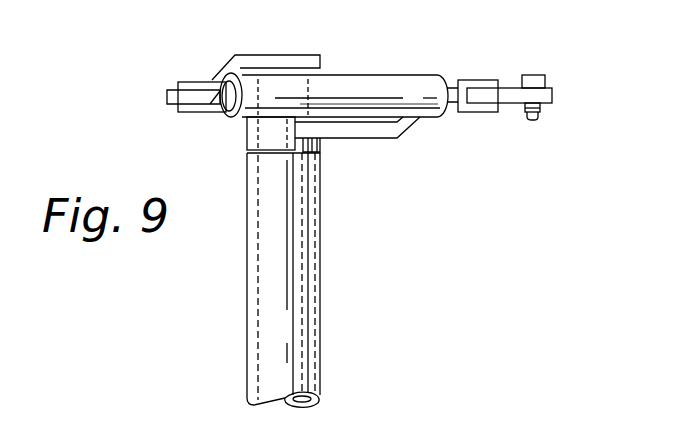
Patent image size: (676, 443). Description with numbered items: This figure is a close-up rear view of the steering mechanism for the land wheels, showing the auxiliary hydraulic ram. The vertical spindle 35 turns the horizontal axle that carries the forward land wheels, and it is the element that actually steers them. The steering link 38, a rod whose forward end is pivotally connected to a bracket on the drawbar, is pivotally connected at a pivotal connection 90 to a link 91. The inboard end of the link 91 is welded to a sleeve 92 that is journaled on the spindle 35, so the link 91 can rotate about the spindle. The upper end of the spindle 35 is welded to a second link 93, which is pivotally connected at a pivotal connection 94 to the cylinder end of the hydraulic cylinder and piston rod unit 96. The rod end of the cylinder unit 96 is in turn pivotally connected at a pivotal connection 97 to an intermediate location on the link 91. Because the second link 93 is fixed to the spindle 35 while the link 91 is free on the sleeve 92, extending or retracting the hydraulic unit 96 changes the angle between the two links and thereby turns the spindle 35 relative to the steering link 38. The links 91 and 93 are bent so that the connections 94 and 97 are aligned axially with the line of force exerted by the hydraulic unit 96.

The spindle 35 is at (320, 152).
The steering link 38 is at (545, 80).
The pivotal connection 90 is at (537, 70).
The link 91 is at (380, 138).
The sleeve 92 is at (247, 132).
The second link 93 is at (287, 57).
The pivotal connection 94 is at (182, 81).
The hydraulic cylinder and piston rod unit 96 is at (399, 70).
The pivotal connection 97 is at (480, 70).